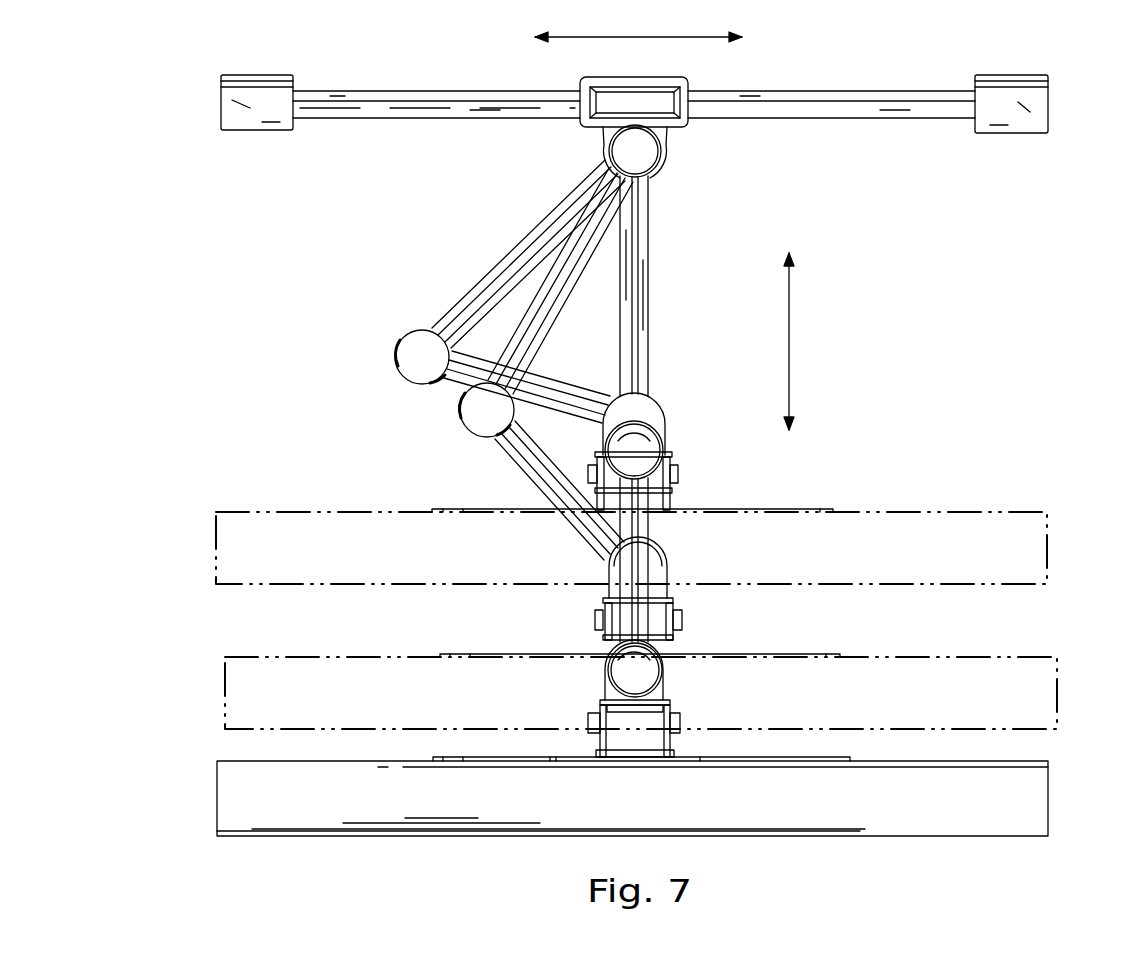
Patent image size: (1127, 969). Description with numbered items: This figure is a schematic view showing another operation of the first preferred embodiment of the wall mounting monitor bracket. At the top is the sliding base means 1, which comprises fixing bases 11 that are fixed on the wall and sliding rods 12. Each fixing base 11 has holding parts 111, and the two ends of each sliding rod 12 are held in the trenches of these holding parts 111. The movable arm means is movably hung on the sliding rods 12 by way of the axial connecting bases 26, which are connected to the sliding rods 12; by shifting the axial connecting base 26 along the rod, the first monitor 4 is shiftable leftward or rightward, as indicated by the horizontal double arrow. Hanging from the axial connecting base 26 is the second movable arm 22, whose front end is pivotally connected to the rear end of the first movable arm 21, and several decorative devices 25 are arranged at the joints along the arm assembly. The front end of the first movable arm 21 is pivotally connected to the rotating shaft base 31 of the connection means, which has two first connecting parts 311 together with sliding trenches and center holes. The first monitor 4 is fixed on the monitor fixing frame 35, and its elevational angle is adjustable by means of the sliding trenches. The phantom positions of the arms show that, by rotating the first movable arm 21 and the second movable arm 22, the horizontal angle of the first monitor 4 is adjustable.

The sliding base means 1 is at (759, 119).
The fixing base 11 is at (265, 135).
The holding part 111 is at (245, 108).
The sliding rod 12 is at (372, 102).
The axial connecting base 26 is at (597, 125).
The decorative device 25 is at (645, 155).
The second movable arm 22 is at (654, 286).
The first movable arm 21 is at (641, 521).
The first connecting part 311 is at (607, 683).
The rotating shaft base 31 is at (671, 690).
The monitor fixing frame 35 is at (748, 757).
The first monitor 4 is at (1005, 822).